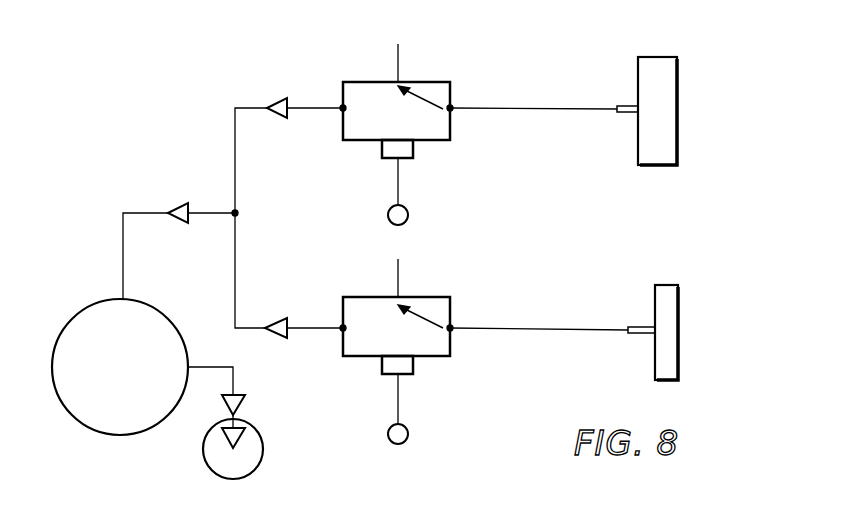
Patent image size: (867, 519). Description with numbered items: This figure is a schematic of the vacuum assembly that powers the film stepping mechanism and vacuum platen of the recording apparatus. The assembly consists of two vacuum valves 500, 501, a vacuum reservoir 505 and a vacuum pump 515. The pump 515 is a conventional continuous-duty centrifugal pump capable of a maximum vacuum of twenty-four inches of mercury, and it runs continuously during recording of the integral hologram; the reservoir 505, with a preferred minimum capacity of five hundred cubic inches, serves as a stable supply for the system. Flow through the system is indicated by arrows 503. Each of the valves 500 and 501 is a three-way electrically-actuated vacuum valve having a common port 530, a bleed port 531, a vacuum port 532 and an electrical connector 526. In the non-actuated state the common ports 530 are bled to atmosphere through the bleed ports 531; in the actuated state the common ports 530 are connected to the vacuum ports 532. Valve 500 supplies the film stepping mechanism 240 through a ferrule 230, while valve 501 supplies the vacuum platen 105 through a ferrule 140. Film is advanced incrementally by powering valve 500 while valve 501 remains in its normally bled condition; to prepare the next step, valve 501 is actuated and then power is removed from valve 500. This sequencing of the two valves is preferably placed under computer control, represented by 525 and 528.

The vacuum valve 500 is at (364, 90).
The vacuum valve 501 is at (357, 312).
The bleed port 531 is at (417, 72).
The common port 530 is at (450, 107).
The vacuum port 532 is at (343, 108).
The electrical connector 526 is at (382, 150).
The computer control 525 is at (407, 211).
The computer control 528 is at (408, 430).
The arrows 503 is at (197, 173).
The vacuum reservoir 505 is at (71, 295).
The vacuum pump 515 is at (263, 433).
The film stepping mechanism 240 is at (678, 62).
The ferrule 230 is at (627, 113).
The vacuum platen 105 is at (707, 281).
The ferrule 140 is at (640, 334).